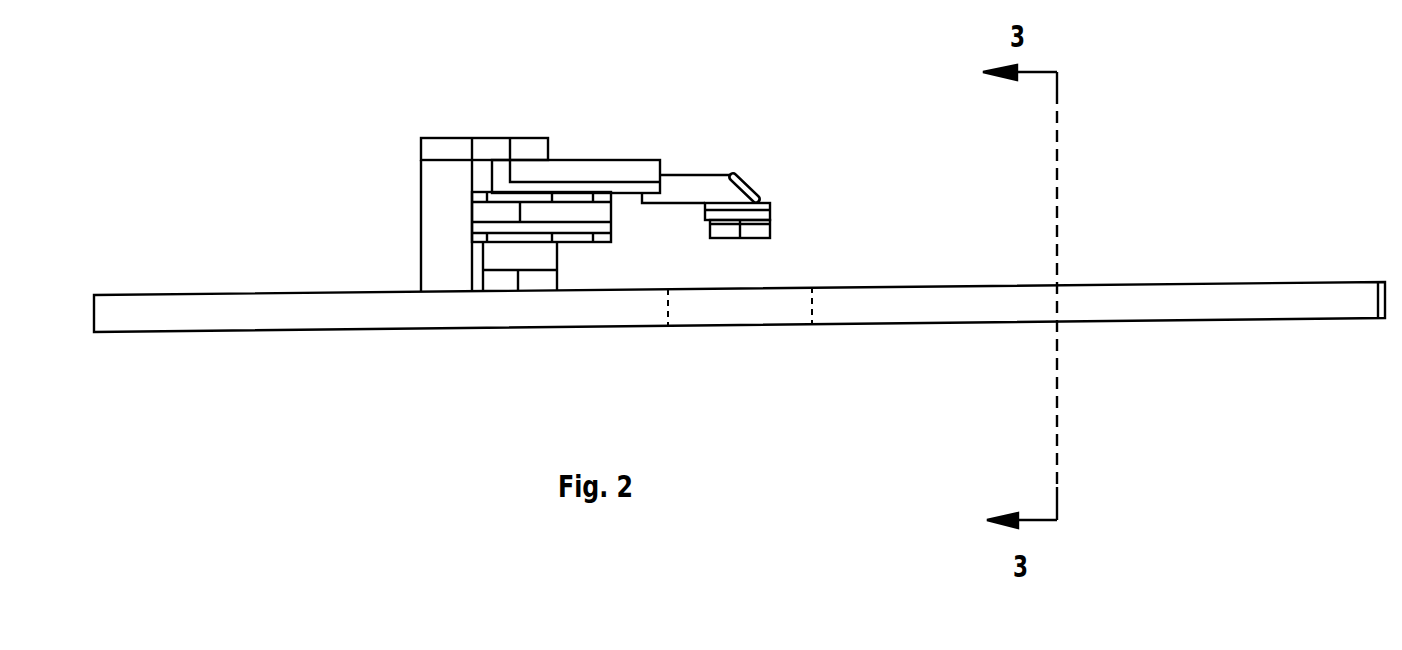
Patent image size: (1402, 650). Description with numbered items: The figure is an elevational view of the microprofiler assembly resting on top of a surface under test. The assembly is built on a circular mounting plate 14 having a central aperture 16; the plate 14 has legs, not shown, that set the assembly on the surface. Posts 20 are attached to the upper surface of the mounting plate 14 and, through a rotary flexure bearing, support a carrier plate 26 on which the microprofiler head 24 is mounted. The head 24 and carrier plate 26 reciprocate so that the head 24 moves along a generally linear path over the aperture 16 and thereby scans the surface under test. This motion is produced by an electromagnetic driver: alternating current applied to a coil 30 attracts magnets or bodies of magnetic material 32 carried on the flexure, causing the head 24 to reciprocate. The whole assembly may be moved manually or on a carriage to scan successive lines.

The mounting plate 14 is at (962, 285).
The central aperture 16 is at (812, 302).
The posts 20 is at (447, 263).
The microprofiler head 24 is at (770, 220).
The carrier plate 26 is at (573, 158).
The coil 30 is at (532, 257).
The magnets or bodies of magnetic material 32 is at (542, 210).